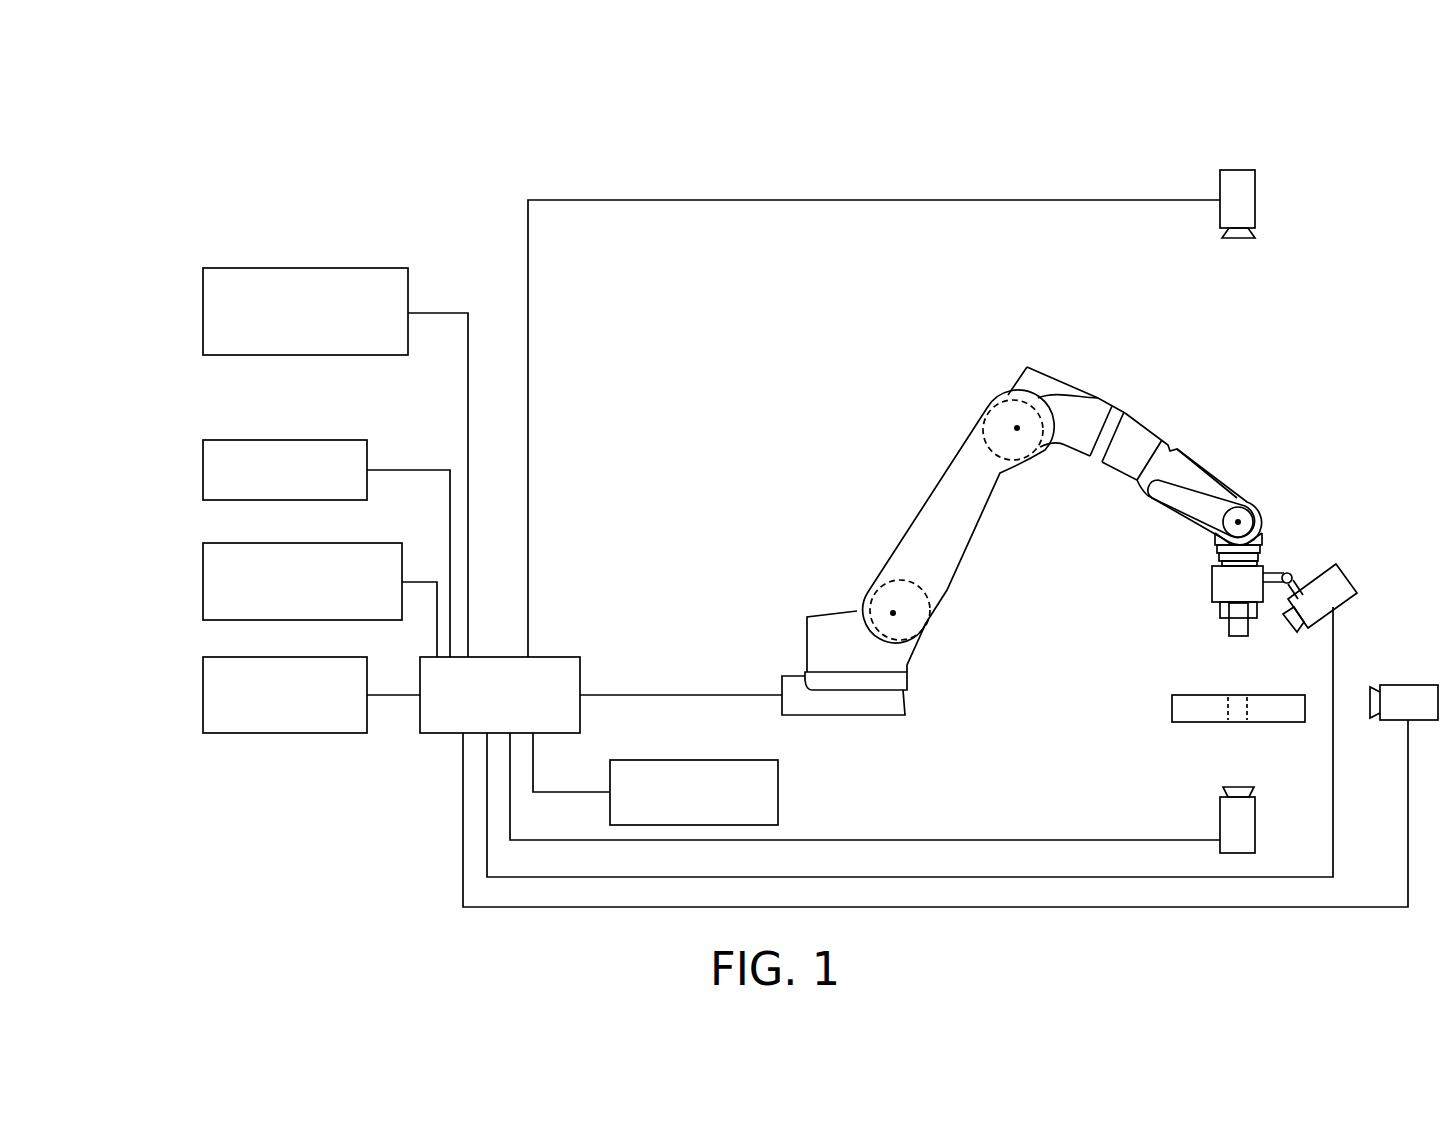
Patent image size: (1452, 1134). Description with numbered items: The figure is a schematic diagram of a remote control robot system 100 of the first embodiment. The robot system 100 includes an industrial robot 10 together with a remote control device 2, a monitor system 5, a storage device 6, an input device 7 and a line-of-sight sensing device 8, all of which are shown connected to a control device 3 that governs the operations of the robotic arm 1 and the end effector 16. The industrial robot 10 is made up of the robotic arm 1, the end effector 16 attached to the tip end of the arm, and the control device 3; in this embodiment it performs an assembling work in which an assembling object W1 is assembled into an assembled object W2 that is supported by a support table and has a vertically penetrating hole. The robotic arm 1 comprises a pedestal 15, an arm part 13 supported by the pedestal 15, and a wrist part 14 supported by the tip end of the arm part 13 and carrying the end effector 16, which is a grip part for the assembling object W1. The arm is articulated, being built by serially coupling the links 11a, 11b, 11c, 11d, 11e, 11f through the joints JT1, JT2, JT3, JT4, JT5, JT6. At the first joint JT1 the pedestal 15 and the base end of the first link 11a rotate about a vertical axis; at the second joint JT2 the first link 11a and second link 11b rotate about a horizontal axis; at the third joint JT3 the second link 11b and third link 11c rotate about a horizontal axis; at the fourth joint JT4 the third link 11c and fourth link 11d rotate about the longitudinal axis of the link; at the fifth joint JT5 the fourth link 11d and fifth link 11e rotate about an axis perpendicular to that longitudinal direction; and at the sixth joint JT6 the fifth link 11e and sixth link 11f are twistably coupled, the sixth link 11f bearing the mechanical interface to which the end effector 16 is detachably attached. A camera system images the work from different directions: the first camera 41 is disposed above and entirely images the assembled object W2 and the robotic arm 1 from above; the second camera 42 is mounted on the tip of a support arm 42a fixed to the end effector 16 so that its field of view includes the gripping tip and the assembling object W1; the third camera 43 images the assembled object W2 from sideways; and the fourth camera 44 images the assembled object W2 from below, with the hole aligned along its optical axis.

The robot system 100 is at (309, 153).
The robotic arm 1 is at (767, 594).
The remote control device 2 is at (203, 313).
The control device 3 is at (558, 657).
The monitor system 5 is at (203, 693).
The storage device 6 is at (778, 790).
The input device 7 is at (203, 468).
The line-of-sight sensing device 8 is at (203, 580).
The industrial robot 10 is at (740, 523).
The first link 11a is at (830, 615).
The second link 11b is at (940, 475).
The third link 11c is at (1090, 395).
The fourth link 11d is at (1188, 448).
The fifth link 11e is at (1205, 528).
The sixth link 11f is at (1216, 560).
The arm part 13 is at (982, 511).
The wrist part 14 is at (1211, 457).
The pedestal 15 is at (880, 717).
The end effector 16 is at (1212, 581).
The first joint JT1 is at (908, 681).
The second joint JT2 is at (918, 622).
The third joint JT3 is at (1000, 418).
The fourth joint JT4 is at (1113, 410).
The fifth joint JT5 is at (1254, 497).
The sixth joint JT6 is at (1215, 548).
The assembling object W1 is at (1228, 627).
The assembled object W2 is at (1172, 708).
The first camera 41 is at (1257, 200).
The second camera 42 is at (1350, 572).
The support arm 42a is at (1273, 567).
The third camera 43 is at (1405, 685).
The fourth camera 44 is at (1218, 815).